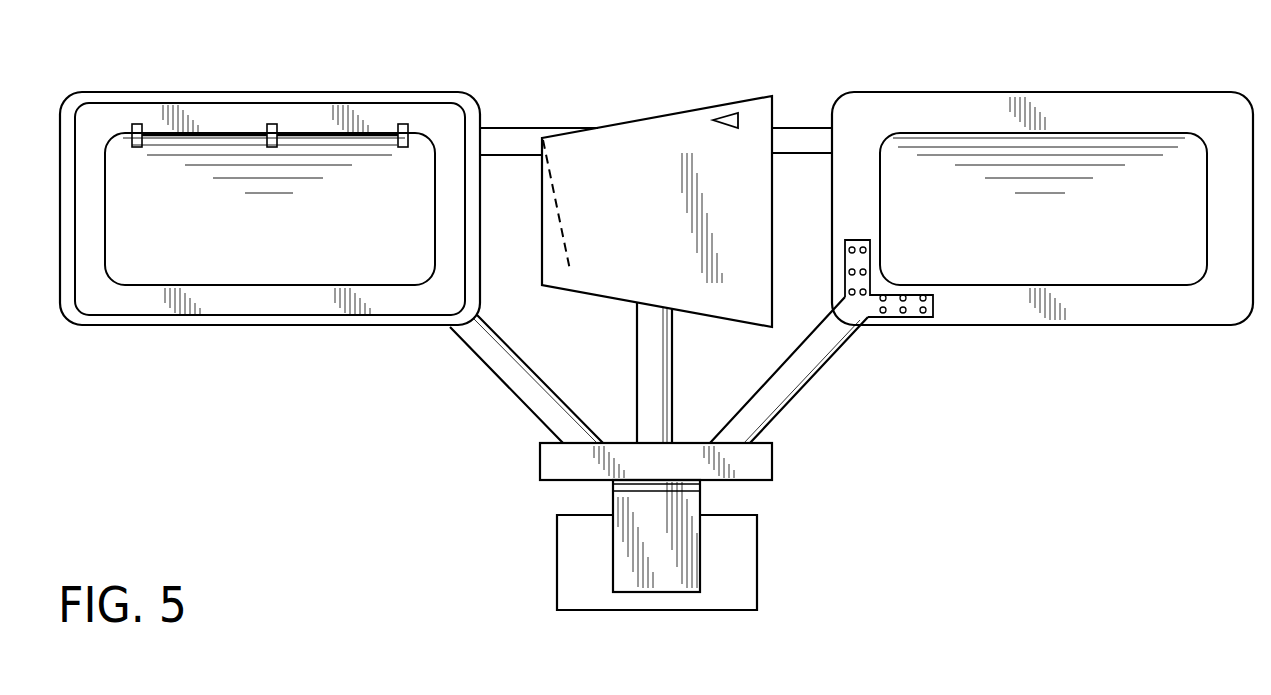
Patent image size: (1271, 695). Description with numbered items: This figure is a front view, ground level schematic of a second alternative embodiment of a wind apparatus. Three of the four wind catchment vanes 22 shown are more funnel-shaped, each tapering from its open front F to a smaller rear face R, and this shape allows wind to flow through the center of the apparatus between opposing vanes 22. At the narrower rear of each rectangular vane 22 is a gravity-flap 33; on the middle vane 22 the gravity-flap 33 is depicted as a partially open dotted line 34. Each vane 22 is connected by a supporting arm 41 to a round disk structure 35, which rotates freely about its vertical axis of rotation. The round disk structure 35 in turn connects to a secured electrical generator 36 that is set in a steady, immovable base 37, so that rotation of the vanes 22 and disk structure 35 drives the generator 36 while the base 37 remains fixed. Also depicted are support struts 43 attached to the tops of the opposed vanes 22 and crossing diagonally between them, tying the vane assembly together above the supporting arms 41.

The wind catchment vane 22 is at (213, 92).
The rear face R is at (375, 115).
The open front F is at (725, 112).
The support strut 43 is at (505, 127).
The gravity-flap 33 is at (290, 230).
The partially open dotted line 34 is at (557, 273).
The supporting arm 41 is at (527, 407).
The round disk structure 35 is at (772, 460).
The electrical generator 36 is at (700, 502).
The base 37 is at (757, 562).